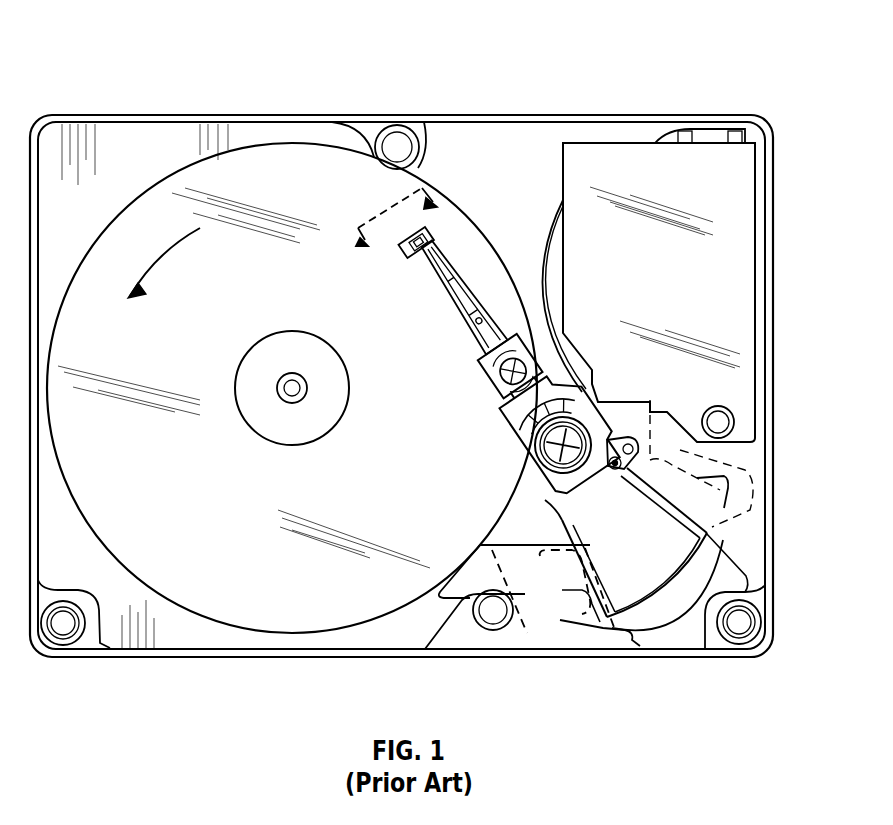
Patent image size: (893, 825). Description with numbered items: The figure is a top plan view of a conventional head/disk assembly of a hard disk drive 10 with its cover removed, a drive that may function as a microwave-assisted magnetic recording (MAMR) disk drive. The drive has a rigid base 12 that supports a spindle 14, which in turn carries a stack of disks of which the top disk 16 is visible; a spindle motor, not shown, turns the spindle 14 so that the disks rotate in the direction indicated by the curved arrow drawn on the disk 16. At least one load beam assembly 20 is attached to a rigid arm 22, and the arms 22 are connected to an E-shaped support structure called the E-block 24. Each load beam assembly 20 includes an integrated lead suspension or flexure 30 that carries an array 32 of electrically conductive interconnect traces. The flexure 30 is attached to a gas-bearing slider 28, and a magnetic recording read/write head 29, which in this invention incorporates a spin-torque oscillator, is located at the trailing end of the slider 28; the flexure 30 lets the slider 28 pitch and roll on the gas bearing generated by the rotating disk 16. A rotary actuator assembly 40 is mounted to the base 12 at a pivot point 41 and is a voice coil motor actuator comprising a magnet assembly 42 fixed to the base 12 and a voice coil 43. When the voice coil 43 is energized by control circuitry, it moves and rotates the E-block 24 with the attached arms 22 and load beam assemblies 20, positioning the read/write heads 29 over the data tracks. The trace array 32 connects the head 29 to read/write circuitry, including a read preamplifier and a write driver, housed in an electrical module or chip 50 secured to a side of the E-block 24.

The disk drive 10 is at (98, 50).
The rigid base 12 is at (180, 660).
The spindle 14 is at (293, 332).
The top disk 16 is at (286, 612).
The load beam assembly 20 is at (472, 364).
The rigid arm 22 is at (498, 381).
The E-block 24 is at (505, 436).
The gas-bearing slider 28 is at (449, 234).
The read/write head 29 is at (418, 246).
The flexure 30 is at (434, 258).
The array of interconnect traces 32 is at (457, 293).
The rotary actuator assembly 40 is at (514, 512).
The pivot point 41 is at (526, 470).
The magnet assembly 42 is at (662, 428).
The voice coil 43 is at (712, 527).
The electrical module or chip 50 is at (604, 402).